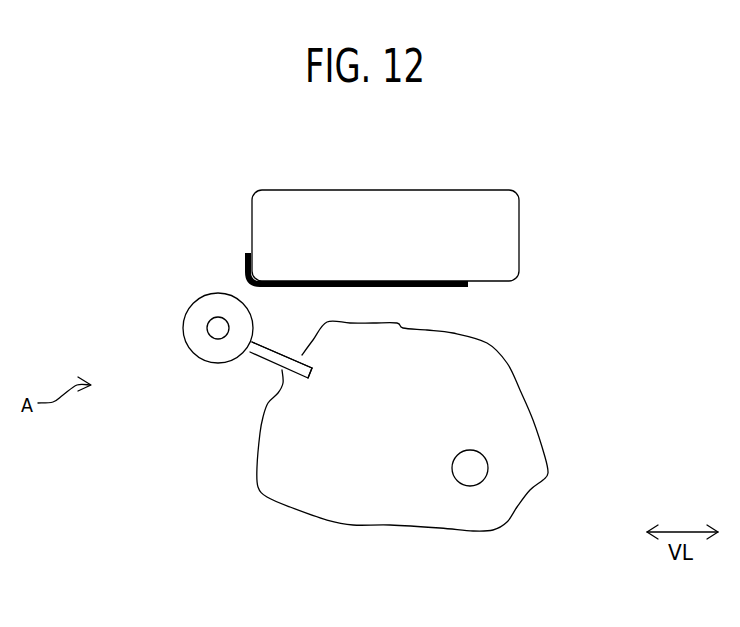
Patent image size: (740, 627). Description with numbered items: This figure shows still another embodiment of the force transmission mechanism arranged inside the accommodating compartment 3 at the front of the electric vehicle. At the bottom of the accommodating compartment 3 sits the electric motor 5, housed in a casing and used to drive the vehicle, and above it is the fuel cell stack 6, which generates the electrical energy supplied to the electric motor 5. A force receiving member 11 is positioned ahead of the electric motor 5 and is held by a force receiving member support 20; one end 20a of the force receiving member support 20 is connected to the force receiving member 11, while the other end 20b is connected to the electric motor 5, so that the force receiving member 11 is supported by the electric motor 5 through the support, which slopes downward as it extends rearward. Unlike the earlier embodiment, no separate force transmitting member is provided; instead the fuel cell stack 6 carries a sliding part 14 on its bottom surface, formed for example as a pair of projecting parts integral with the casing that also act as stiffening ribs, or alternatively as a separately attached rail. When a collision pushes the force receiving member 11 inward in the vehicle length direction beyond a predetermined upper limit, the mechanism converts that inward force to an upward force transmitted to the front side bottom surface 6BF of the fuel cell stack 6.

The accommodating compartment 3 is at (131, 524).
The electric motor 5 is at (515, 518).
The fuel cell stack 6 is at (463, 190).
The front side bottom surface 6BF is at (315, 283).
The force receiving member 11 is at (183, 313).
The sliding part 14 is at (442, 286).
The force receiving member support 20 is at (270, 358).
The one end of force receiving member support 20a is at (252, 355).
The other end of force receiving member support 20b is at (303, 377).